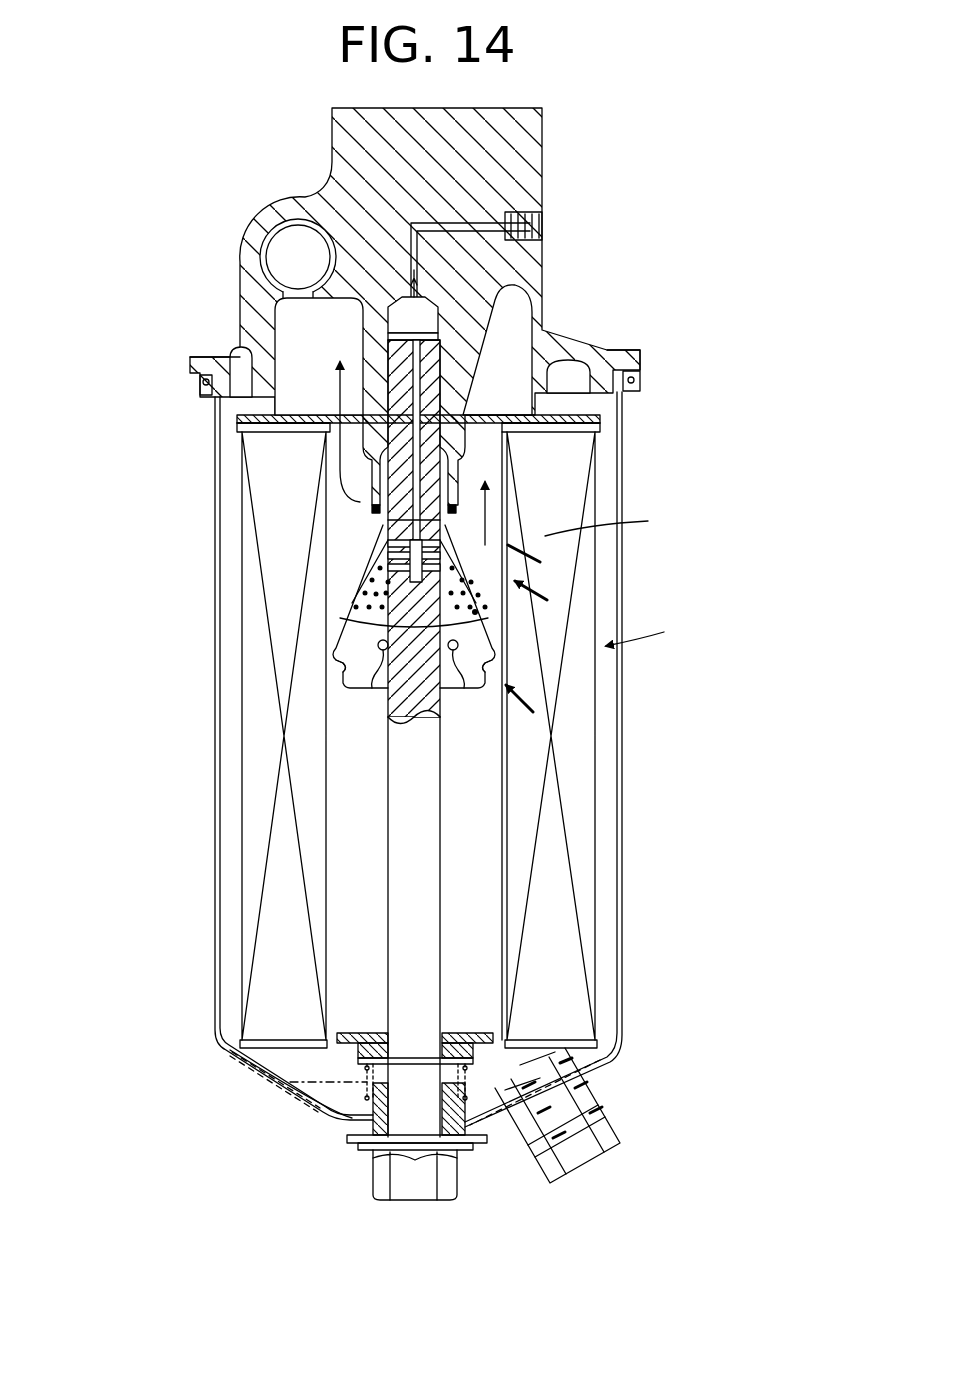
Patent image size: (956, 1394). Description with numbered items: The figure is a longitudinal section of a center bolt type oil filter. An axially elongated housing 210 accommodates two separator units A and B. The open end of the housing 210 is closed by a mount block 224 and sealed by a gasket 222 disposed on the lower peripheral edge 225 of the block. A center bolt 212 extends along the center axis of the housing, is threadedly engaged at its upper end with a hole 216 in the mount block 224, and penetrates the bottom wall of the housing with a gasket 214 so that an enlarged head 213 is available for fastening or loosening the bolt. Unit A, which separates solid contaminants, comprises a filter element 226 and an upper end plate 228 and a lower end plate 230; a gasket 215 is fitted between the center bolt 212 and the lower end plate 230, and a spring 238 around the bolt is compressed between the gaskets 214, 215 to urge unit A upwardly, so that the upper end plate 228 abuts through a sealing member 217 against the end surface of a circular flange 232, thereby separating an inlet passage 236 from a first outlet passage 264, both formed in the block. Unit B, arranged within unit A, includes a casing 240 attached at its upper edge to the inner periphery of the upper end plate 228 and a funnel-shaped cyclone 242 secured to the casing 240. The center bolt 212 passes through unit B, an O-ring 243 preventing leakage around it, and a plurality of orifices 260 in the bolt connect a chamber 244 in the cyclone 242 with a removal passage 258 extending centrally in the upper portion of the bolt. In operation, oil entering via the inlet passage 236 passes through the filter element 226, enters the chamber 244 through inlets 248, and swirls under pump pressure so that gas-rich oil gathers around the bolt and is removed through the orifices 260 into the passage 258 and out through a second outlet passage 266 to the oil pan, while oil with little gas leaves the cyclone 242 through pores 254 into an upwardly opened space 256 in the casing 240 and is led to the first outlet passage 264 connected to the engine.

The housing 210 is at (620, 779).
The center bolt 212 is at (398, 906).
The enlarged head 213 is at (405, 1174).
The gasket 214 is at (478, 1136).
The gasket 215 is at (442, 1040).
The hole 216 is at (440, 364).
The sealing member 217 is at (540, 342).
The gasket 222 is at (205, 409).
The mount block 224 is at (530, 154).
The lower peripheral edge 225 is at (203, 389).
The filter element 226 is at (573, 854).
The upper end plate 228 is at (593, 432).
The lower end plate 230 is at (590, 1054).
The circular flange 232 is at (268, 326).
The inlet passage 236 is at (232, 372).
The spring 238 is at (290, 1086).
The casing 240 is at (318, 434).
The funnel-shaped cyclone 242 is at (397, 594).
The O-ring 243 is at (383, 656).
The chamber 244 is at (455, 656).
The inlets 248 is at (342, 672).
The pores 254 is at (480, 616).
The upwardly opened space 256 is at (375, 557).
The removal passage 258 is at (232, 426).
The orifices 260 is at (465, 549).
The first outlet passage 264 is at (243, 282).
The second outlet passage 266 is at (510, 226).
The separator unit A is at (647, 629).
The separator unit B is at (590, 551).